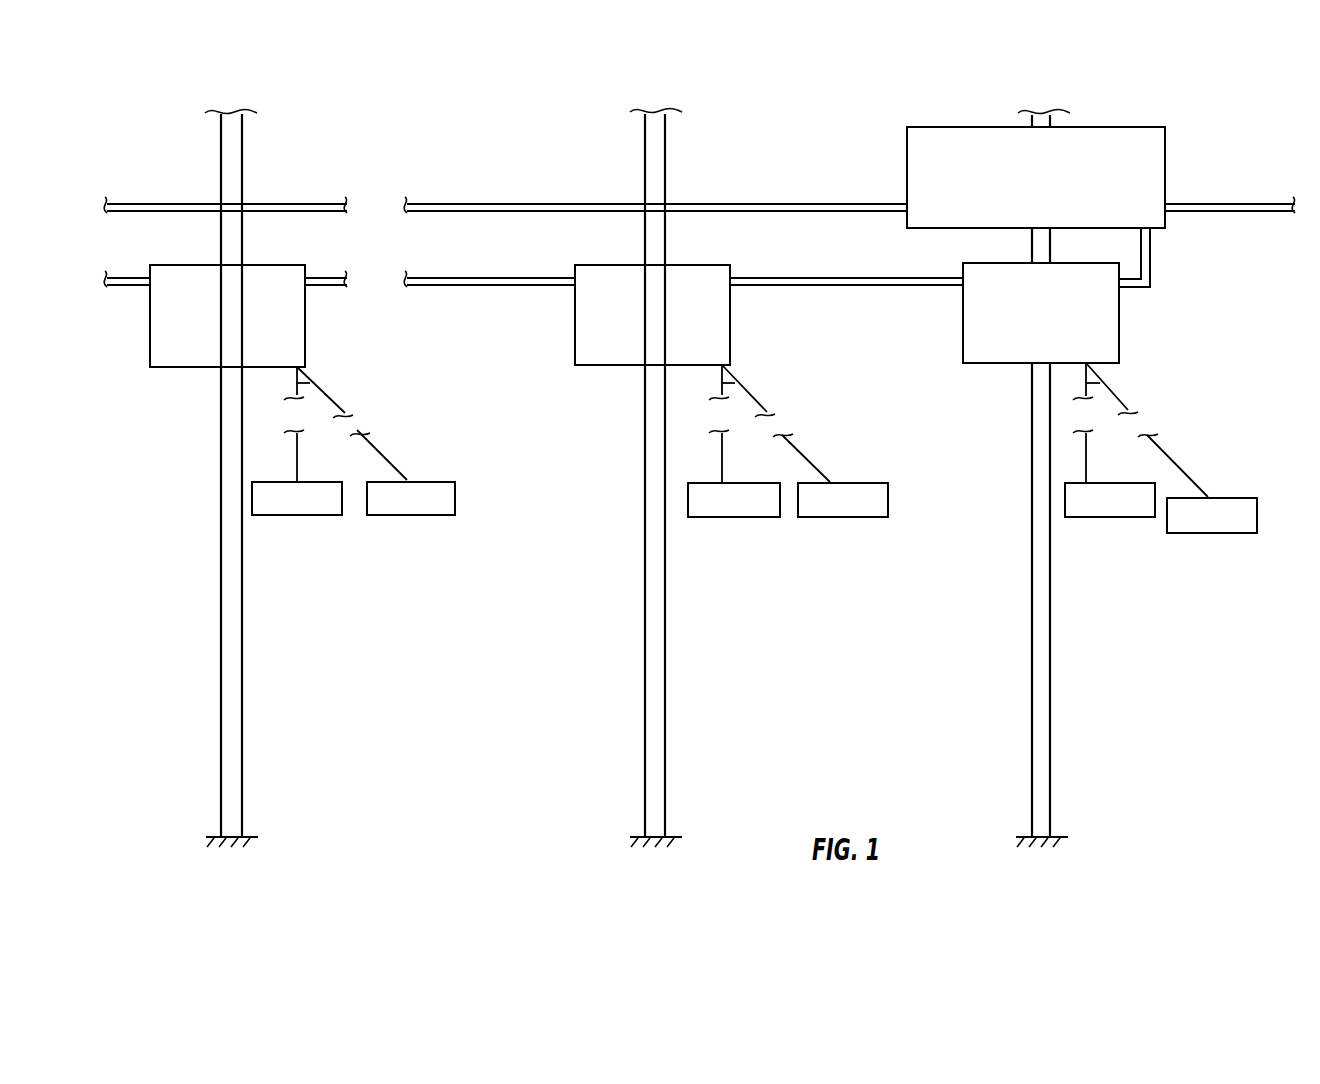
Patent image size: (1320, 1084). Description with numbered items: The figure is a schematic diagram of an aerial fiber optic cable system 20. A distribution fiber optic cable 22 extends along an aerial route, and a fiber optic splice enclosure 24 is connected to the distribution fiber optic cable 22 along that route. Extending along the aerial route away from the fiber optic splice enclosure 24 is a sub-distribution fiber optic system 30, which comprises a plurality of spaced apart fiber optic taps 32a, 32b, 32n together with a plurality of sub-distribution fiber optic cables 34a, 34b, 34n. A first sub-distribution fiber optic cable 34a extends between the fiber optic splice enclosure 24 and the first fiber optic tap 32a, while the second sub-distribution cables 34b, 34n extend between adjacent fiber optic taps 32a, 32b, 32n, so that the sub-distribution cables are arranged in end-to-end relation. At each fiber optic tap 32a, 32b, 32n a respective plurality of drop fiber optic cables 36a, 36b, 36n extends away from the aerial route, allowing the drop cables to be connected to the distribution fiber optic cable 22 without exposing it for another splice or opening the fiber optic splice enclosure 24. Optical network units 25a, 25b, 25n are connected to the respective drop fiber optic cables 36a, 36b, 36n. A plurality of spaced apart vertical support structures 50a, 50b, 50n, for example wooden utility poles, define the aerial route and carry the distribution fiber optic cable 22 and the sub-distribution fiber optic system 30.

The aerial fiber optic cable system 20 is at (1224, 166).
The distribution fiber optic cable 22 is at (724, 205).
The fiber optic splice enclosure 24 is at (1100, 126).
The sub-distribution fiber optic system 30 is at (862, 250).
The fiber optic tap 32a is at (1119, 332).
The fiber optic tap 32b is at (730, 331).
The fiber optic tap 32n is at (305, 331).
The sub-distribution fiber optic cable 34a is at (1150, 288).
The sub-distribution fiber optic cable 34b is at (835, 287).
The sub-distribution fiber optic cable 34n is at (309, 278).
The drop fiber optic cables 36a is at (1105, 396).
The drop fiber optic cables 36b is at (763, 410).
The drop fiber optic cables 36n is at (313, 396).
The optical network units 25a is at (1130, 517).
The optical network units 25b is at (735, 517).
The optical network units 25n is at (301, 515).
The vertical support structure 50a is at (1051, 801).
The vertical support structure 50b is at (666, 801).
The vertical support structure 50n is at (243, 801).